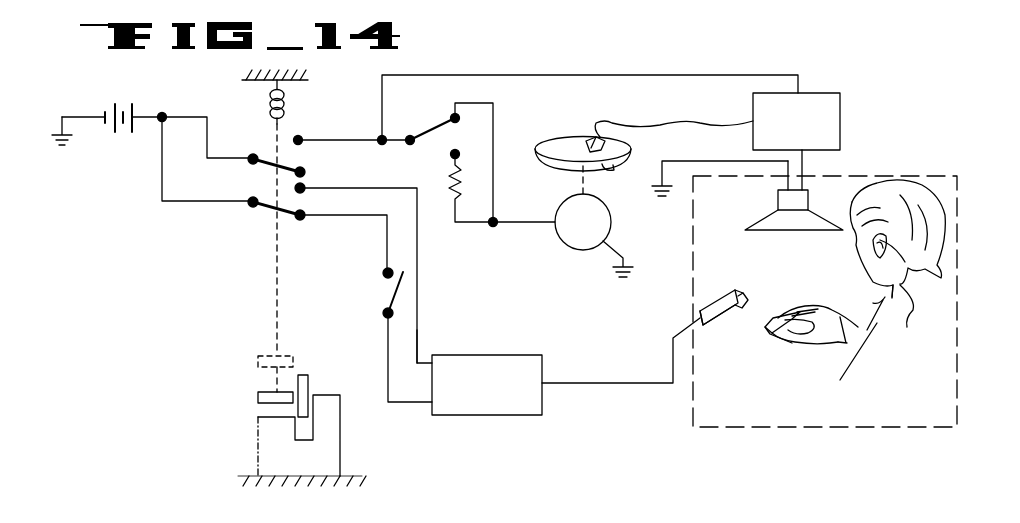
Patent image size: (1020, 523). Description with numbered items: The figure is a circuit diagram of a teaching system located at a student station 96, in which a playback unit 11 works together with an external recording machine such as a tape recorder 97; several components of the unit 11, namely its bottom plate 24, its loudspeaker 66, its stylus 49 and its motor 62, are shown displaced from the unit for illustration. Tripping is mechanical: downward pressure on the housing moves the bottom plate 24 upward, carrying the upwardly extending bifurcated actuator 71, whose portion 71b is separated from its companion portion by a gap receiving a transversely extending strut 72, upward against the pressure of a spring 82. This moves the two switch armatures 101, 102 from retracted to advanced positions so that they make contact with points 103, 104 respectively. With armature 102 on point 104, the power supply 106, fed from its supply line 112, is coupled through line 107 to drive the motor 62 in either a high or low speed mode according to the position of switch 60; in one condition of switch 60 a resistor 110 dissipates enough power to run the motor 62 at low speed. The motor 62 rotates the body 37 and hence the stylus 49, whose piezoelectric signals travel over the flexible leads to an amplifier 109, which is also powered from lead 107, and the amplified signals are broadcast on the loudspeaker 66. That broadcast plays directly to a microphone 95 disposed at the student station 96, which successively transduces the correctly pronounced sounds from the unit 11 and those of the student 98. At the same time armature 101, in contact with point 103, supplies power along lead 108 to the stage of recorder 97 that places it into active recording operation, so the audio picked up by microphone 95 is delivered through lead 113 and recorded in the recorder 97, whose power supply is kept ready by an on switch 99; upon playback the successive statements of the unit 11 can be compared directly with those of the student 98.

The power supply 106 is at (135, 112).
The power supply lead 112 is at (161, 183).
The spring 82 is at (270, 107).
The contact point 104 is at (294, 136).
The line 107 is at (380, 86).
The switch armature 102 is at (250, 163).
The contact point 103 is at (306, 182).
The switch armature 101 is at (268, 208).
The switch 99 is at (392, 290).
The lead 108 is at (420, 333).
The switch 60 is at (427, 130).
The resistor 110 is at (454, 200).
The motor 62 is at (566, 236).
The body 37 is at (557, 145).
The stylus 49 is at (612, 172).
The amplifier 109 is at (840, 140).
The loudspeaker 66 is at (770, 222).
The student station 96 is at (786, 398).
The microphone 95 is at (745, 258).
The lead 113 is at (625, 355).
The tape recorder 97 is at (515, 354).
The unit 11 is at (785, 306).
The student 98 is at (897, 268).
The actuator portion 71b is at (268, 425).
The strut 72 is at (310, 390).
The bifurcated actuator 71 is at (325, 463).
The bottom plate 24 is at (247, 473).